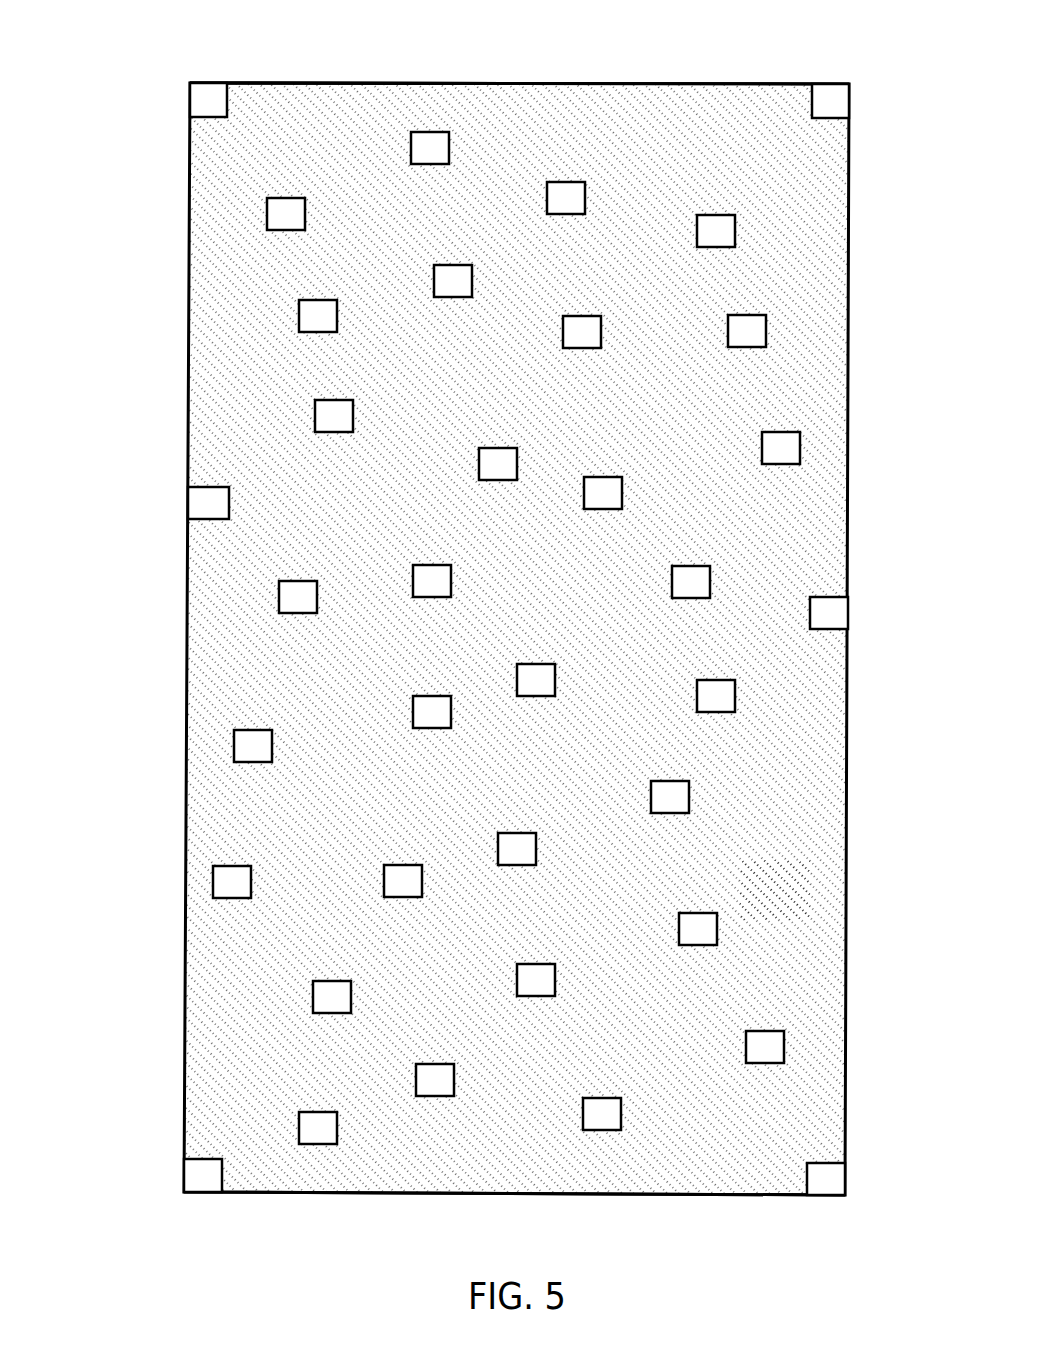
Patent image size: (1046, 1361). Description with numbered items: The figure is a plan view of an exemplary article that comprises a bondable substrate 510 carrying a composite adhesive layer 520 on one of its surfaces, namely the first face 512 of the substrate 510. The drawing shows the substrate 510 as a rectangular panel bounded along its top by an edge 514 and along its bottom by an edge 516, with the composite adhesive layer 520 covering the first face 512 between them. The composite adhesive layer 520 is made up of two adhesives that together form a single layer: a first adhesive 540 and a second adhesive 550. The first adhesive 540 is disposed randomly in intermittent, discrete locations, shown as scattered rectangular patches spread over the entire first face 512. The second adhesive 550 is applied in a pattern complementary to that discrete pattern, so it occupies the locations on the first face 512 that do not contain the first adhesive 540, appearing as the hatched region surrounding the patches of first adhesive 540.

The bondable substrate 510 is at (118, 205).
The first face 512 is at (598, 103).
The top edge 514 is at (335, 84).
The bottom edge 516 is at (581, 1197).
The composite adhesive layer 520 is at (768, 225).
The first adhesive 540 is at (581, 332).
The second adhesive 550 is at (775, 896).